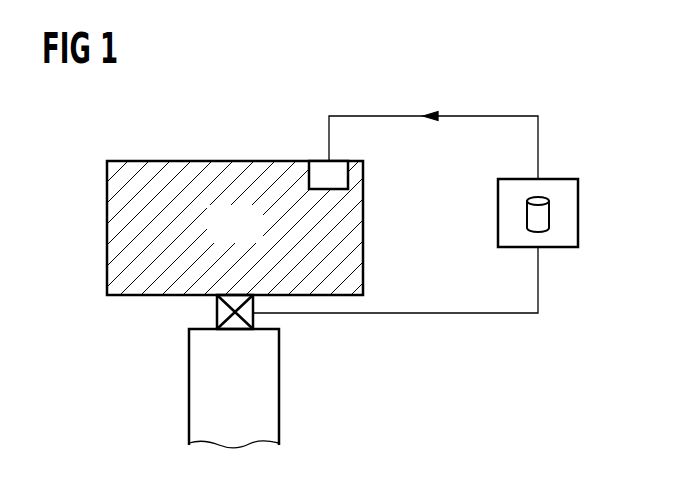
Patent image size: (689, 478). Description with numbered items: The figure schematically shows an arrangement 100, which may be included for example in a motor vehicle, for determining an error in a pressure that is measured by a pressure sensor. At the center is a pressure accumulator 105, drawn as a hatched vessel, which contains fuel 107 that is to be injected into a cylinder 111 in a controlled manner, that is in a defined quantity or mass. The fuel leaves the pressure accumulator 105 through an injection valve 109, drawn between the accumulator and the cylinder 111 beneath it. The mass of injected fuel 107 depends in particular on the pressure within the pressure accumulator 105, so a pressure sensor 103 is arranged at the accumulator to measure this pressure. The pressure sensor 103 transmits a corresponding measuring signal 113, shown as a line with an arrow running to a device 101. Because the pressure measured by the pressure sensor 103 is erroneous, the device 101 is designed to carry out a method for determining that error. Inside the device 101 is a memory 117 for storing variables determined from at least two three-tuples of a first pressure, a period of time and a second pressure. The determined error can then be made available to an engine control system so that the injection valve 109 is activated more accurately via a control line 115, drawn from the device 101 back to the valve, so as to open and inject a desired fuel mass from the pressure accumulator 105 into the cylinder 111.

The arrangement 100 is at (521, 79).
The device 101 is at (580, 213).
The pressure sensor 103 is at (322, 167).
The pressure accumulator 105 is at (107, 229).
The fuel 107 is at (253, 237).
The injection valve 109 is at (218, 312).
The cylinder 111 is at (273, 387).
The measuring signal 113 is at (432, 112).
The control line 115 is at (396, 313).
The memory 117 is at (525, 212).